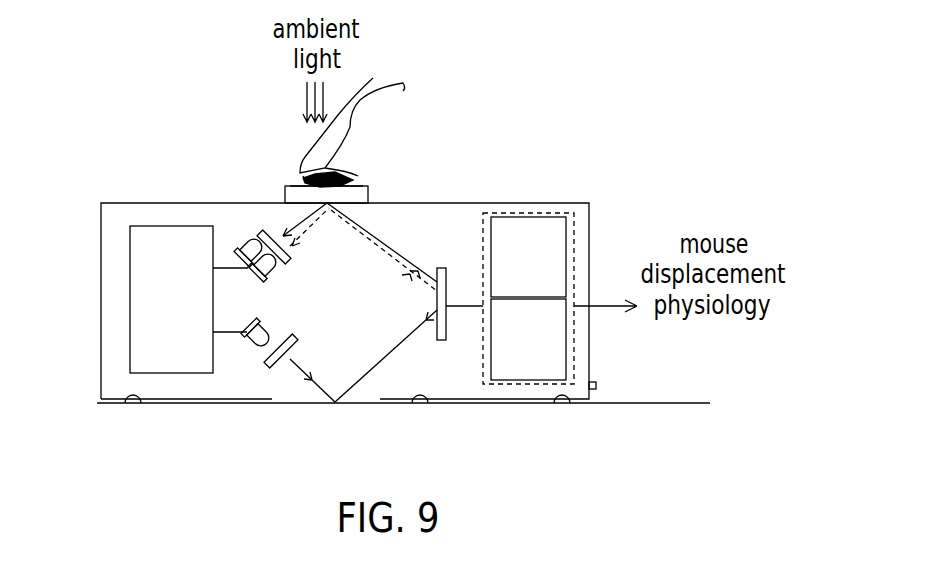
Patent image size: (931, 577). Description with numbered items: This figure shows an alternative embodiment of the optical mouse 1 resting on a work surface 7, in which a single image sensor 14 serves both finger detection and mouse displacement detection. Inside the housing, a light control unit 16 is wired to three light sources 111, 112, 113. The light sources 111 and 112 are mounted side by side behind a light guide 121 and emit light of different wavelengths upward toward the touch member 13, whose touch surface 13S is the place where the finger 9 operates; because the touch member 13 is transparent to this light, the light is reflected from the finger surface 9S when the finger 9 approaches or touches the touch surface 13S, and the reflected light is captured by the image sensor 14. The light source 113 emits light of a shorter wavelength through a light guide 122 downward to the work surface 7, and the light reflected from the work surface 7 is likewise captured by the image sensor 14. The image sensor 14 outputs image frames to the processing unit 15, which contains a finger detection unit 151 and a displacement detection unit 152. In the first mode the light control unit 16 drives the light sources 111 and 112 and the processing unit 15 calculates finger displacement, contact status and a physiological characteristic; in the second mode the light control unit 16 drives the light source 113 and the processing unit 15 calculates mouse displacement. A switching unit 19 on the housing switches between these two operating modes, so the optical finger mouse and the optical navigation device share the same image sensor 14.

The optical mouse 1 is at (622, 169).
The work surface 7 is at (678, 403).
The finger 9 is at (373, 78).
The finger surface 9S is at (303, 178).
The touch member 13 is at (283, 196).
The touch surface 13S is at (363, 178).
The image sensor 14 is at (442, 341).
The processing unit 15 is at (575, 260).
The finger detection unit 151 is at (567, 231).
The displacement detection unit 152 is at (567, 350).
The light control unit 16 is at (130, 297).
The switching unit 19 is at (597, 386).
The light source 111 is at (238, 256).
The light source 112 is at (266, 277).
The light source 113 is at (252, 346).
The light guide 121 is at (290, 259).
The light guide 122 is at (268, 367).